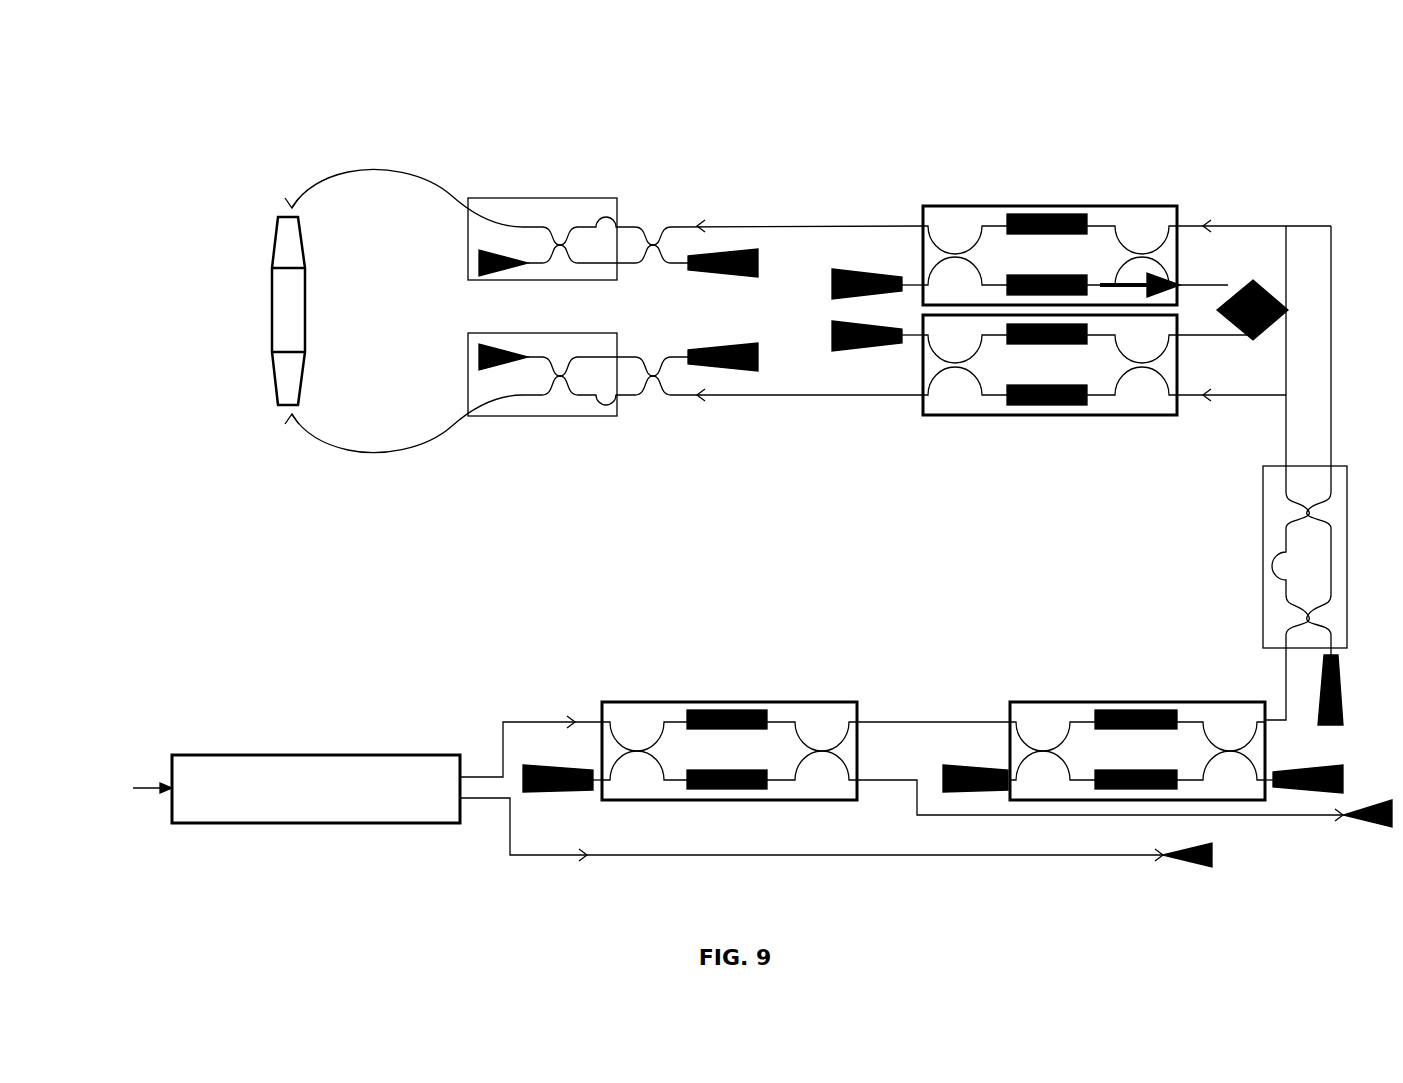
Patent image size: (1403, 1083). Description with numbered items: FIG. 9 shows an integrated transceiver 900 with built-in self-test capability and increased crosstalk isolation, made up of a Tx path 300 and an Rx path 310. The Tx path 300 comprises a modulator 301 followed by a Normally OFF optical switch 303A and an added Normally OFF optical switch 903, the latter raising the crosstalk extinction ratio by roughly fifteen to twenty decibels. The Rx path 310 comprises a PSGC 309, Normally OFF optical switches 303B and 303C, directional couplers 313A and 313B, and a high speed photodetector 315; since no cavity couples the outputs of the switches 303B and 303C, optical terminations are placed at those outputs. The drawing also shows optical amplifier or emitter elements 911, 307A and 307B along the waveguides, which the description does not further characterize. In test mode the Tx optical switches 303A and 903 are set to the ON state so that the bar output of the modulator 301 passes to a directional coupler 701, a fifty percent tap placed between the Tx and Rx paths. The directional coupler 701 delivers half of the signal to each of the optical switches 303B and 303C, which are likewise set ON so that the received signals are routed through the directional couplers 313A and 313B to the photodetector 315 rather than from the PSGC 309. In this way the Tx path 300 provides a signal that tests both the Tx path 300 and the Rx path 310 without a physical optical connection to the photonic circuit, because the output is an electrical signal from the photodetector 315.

The Rx path 310 is at (258, 156).
The high speed photodetector 315 is at (305, 318).
The directional coupler 313A is at (567, 198).
The directional coupler 313B is at (557, 416).
The optical amplifiers 911 is at (733, 274).
The Normally OFF optical switch 303C is at (965, 206).
The Normally OFF optical switch 303B is at (932, 415).
The PSGC 309 is at (1262, 290).
The directional coupler 701 is at (1263, 525).
The Tx path 300 is at (272, 648).
The modulator 301 is at (316, 789).
The transceiver 900 is at (840, 492).
The Normally OFF optical switch 303A is at (648, 702).
The Normally OFF optical switch 903 is at (1043, 702).
The optical emitter 307A is at (1177, 866).
The optical emitter 307B is at (1366, 828).